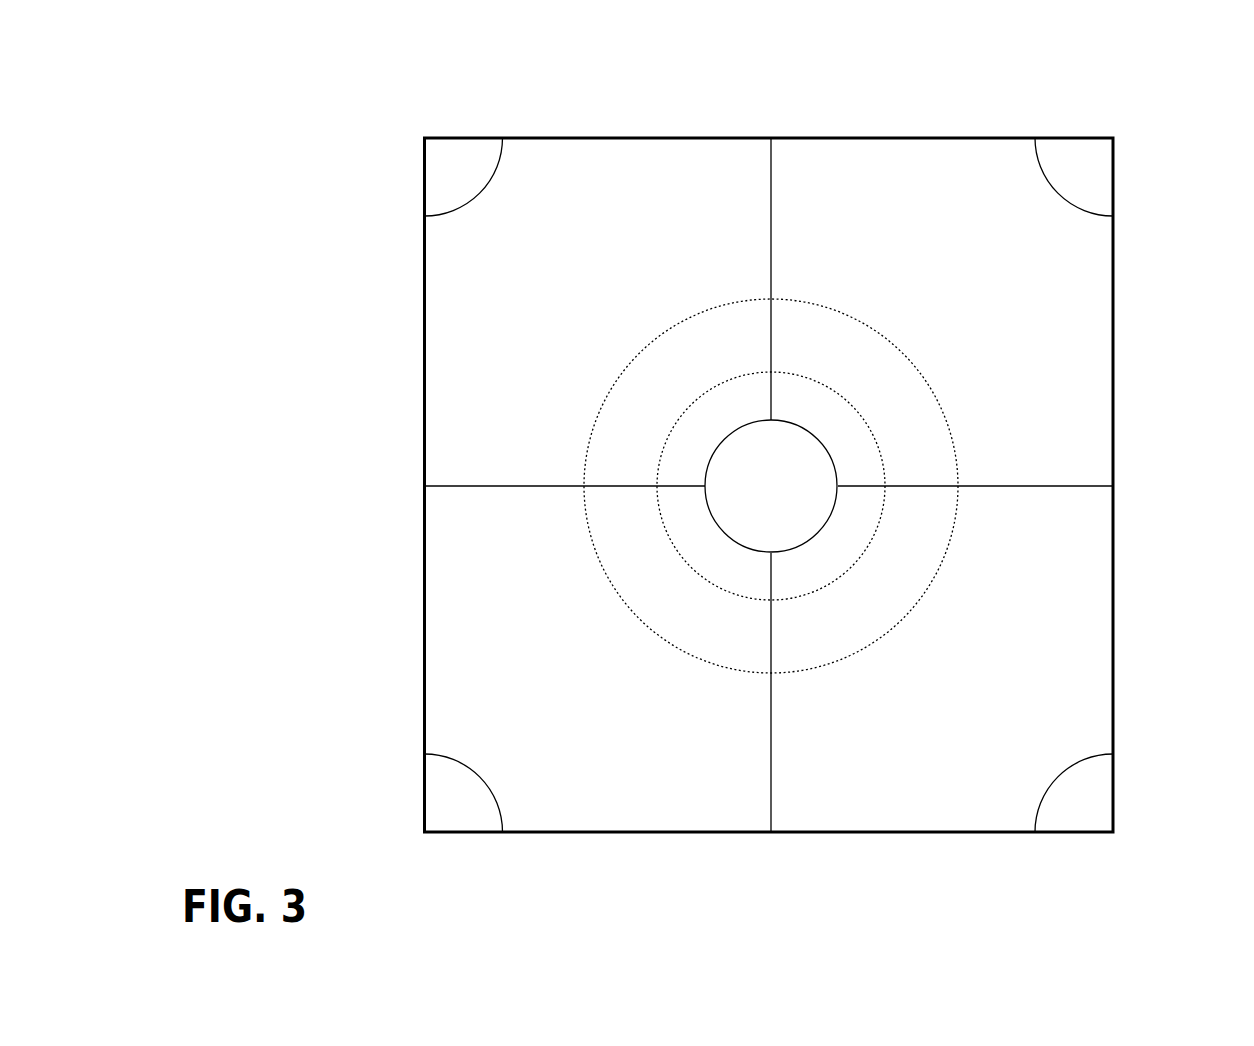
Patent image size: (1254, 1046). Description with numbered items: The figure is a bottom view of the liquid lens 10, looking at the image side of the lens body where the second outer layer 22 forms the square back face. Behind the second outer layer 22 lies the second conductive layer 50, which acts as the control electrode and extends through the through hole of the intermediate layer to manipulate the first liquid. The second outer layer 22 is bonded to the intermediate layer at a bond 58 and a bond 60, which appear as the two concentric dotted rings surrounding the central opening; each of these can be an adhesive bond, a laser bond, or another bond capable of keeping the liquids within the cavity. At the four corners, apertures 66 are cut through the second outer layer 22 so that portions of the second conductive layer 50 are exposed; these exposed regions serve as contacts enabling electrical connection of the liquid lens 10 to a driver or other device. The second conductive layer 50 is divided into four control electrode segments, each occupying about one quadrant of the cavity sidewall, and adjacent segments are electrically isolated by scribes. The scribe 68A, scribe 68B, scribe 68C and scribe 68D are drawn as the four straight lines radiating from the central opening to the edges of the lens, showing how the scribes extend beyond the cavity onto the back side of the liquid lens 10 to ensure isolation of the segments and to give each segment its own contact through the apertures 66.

The liquid lens 10 is at (548, 92).
The second outer layer 22 is at (683, 190).
The second conductive layer 50 is at (1017, 308).
The bond 58 is at (678, 551).
The bond 60 is at (638, 623).
The apertures 66 is at (440, 172).
The scribe 68A is at (771, 391).
The scribe 68B is at (682, 486).
The scribe 68C is at (771, 578).
The scribe 68D is at (863, 486).